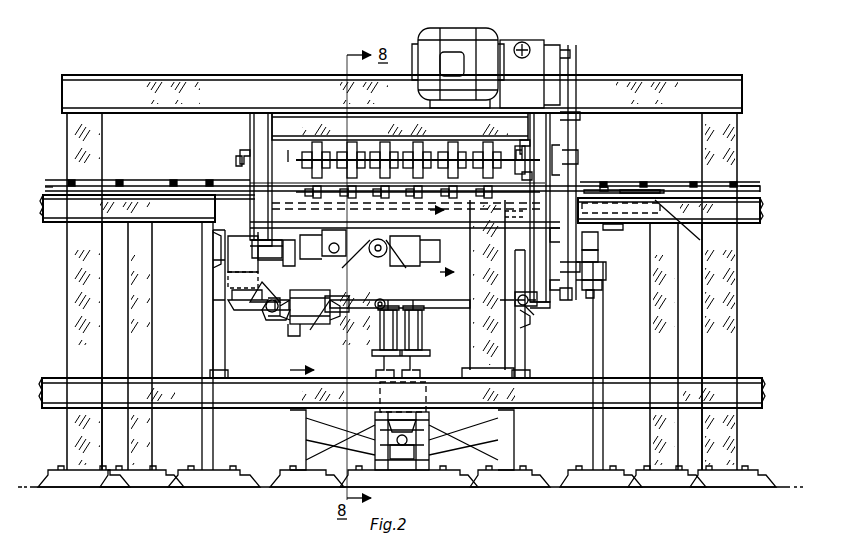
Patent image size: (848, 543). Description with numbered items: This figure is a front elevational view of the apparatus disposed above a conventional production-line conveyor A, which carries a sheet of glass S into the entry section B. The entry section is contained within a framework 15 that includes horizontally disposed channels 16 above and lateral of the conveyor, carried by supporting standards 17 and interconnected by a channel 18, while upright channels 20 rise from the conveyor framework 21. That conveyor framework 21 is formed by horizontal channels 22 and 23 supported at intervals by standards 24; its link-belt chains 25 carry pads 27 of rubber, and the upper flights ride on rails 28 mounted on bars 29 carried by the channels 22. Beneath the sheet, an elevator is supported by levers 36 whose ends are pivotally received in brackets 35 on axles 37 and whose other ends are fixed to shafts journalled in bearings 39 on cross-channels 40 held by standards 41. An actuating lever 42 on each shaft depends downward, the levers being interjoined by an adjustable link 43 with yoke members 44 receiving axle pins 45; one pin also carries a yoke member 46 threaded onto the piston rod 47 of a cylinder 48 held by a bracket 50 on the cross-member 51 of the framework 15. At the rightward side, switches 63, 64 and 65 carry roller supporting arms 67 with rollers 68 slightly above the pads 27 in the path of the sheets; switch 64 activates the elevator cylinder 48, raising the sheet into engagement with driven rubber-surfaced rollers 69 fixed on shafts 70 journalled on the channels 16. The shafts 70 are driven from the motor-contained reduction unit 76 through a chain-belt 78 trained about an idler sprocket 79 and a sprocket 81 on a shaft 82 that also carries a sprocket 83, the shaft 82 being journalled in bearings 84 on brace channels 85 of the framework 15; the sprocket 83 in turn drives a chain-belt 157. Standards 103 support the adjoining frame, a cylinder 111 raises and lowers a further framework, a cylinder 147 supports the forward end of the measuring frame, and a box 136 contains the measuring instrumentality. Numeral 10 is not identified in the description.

The framework 15 is at (172, 74).
The channel 18 is at (248, 98).
The supporting standard 17 is at (82, 142).
The standard 24 is at (138, 329).
The standard 103 is at (213, 430).
The channel 23 is at (165, 393).
The conveyor framework 21 is at (52, 224).
The channel 22 is at (158, 210).
The bar 29 is at (133, 200).
The sheet of glass S is at (182, 182).
The pad 27 is at (128, 180).
The rail 28 is at (112, 180).
The link-belt chain 25 is at (748, 184).
The conveyor A is at (52, 178).
The entry section B is at (290, 150).
The motor-contained reduction unit 76 is at (437, 36).
The chain-belt 78 is at (580, 82).
The channel 16 is at (250, 126).
The upright channel 20 is at (248, 140).
The driven rubber-surfaced roller 69 is at (350, 144).
The shaft 70 is at (434, 158).
The idler sprocket 79 is at (522, 174).
The conveyor plate 10 is at (432, 240).
The standard 41 is at (213, 264).
The cross-channel 40 is at (250, 272).
The cross-member 51 is at (232, 304).
The axle 37 is at (300, 258).
The bracket 35 is at (346, 235).
The bearing 39 is at (386, 258).
The lever 36 is at (303, 306).
The yoke member 44 is at (400, 300).
The actuating lever 42 is at (374, 306).
The axle pin 45 is at (384, 360).
The adjustable link 43 is at (440, 310).
The cylinder 147 is at (416, 320).
The yoke member 46 is at (360, 300).
The piston rod 47 is at (310, 322).
The cylinder 48 is at (278, 320).
The bracket 50 is at (260, 312).
The box 136 is at (288, 368).
The cylinder 111 is at (430, 434).
The chain-belt 157 is at (600, 240).
The brace channel 85 is at (600, 256).
The bearing 84 is at (606, 272).
The sprocket 83 is at (602, 286).
The sprocket 81 is at (594, 294).
The shaft 82 is at (568, 300).
The roller supporting arm 67 is at (636, 236).
The switch 63 is at (602, 184).
The switch 64 is at (624, 182).
The switch 65 is at (640, 185).
The roller 68 is at (646, 188).